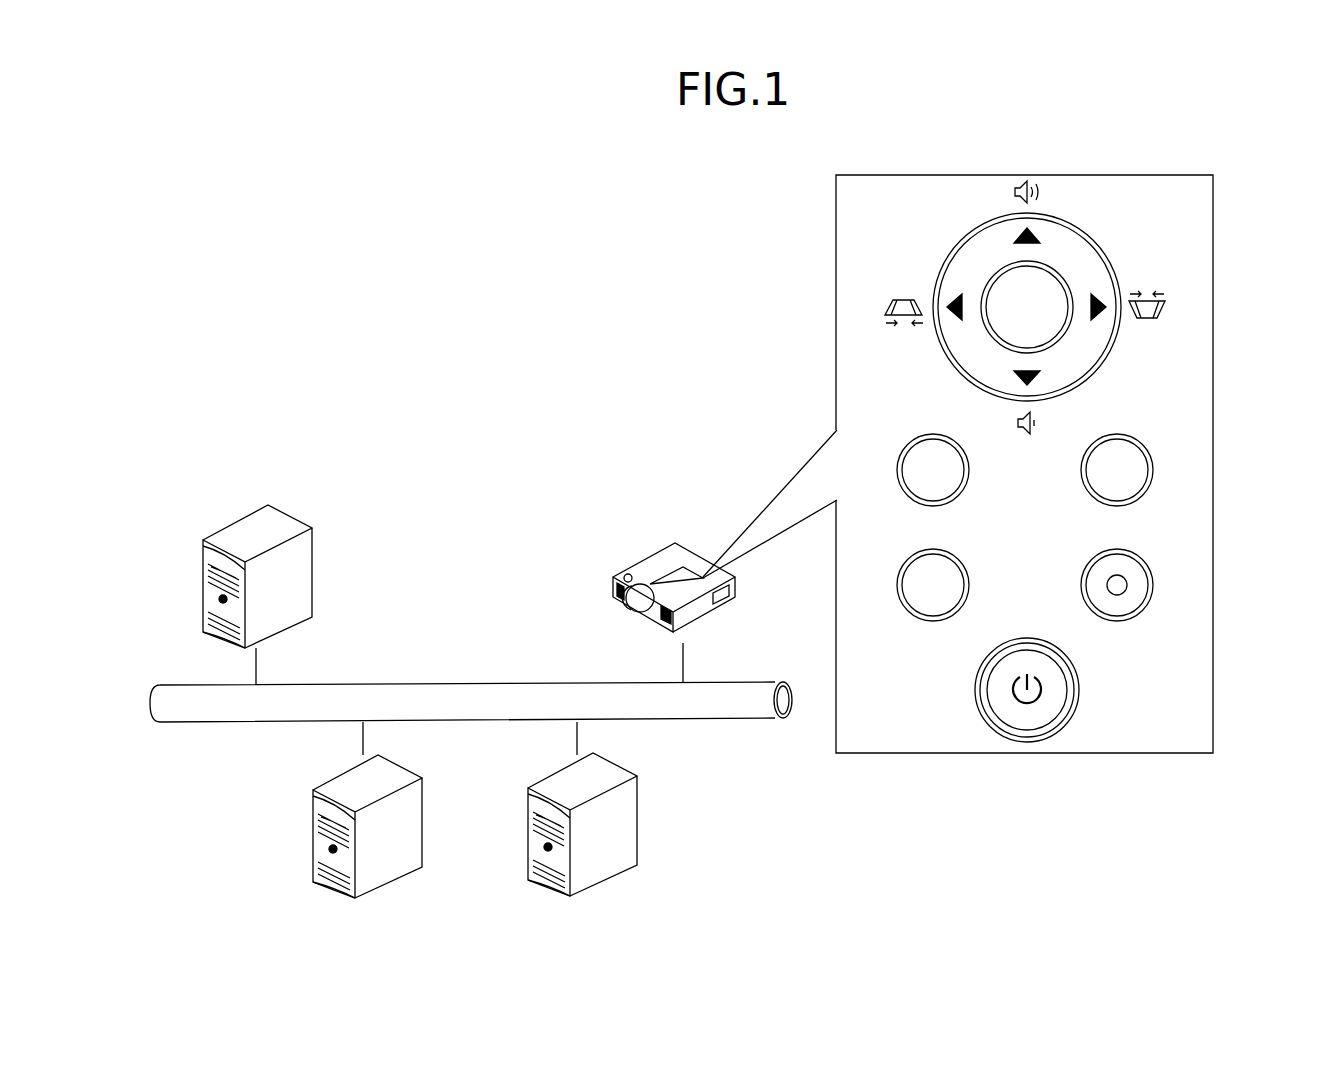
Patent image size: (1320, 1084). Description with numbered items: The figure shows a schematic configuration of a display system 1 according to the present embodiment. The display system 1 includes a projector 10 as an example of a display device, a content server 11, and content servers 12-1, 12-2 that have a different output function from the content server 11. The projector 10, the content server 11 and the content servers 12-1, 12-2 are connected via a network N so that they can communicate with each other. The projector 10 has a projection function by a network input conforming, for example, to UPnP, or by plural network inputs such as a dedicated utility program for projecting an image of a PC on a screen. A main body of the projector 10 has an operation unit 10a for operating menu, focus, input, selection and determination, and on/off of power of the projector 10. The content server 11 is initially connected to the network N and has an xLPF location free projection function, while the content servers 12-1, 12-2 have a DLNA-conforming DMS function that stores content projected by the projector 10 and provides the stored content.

The display system 1 is at (756, 419).
The projector 10 is at (710, 610).
The operation unit 10a is at (1213, 240).
The content server 11 is at (312, 566).
The content server 12-1 is at (367, 897).
The content server 12-2 is at (582, 895).
The network N is at (200, 722).